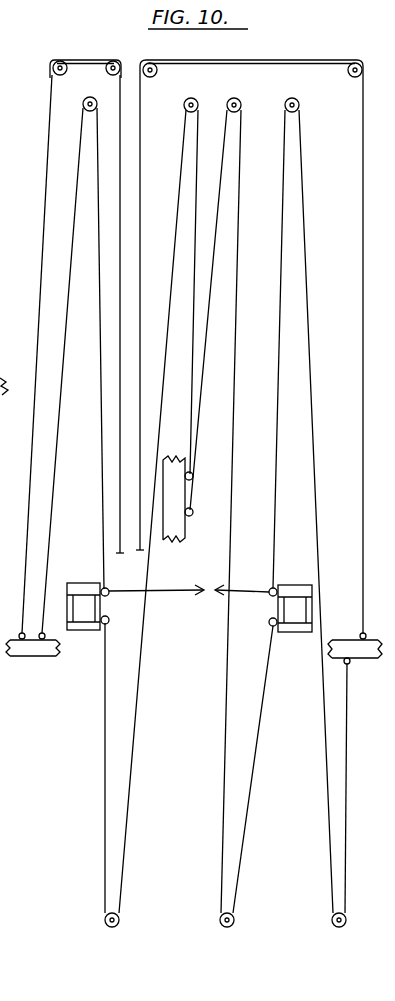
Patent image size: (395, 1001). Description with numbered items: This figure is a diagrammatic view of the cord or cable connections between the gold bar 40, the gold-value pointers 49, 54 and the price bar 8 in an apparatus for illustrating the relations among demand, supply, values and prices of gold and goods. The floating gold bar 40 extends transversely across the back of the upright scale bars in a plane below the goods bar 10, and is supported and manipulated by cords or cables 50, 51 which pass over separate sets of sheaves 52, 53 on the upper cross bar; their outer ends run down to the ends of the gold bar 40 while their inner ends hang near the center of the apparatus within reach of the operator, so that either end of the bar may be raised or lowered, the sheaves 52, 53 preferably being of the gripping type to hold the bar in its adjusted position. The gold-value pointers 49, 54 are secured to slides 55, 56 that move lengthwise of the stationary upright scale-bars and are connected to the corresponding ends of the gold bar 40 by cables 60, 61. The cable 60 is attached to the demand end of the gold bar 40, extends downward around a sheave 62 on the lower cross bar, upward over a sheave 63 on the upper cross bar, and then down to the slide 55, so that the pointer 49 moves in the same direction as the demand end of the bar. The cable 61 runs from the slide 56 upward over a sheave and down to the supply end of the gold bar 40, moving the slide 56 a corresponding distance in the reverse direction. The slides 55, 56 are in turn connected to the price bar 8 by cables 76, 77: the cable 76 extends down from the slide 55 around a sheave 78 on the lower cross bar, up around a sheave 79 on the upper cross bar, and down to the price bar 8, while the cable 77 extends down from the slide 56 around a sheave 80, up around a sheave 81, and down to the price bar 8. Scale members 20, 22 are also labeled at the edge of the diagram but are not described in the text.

The price bar 8 is at (172, 542).
The goods bar 10 is at (9, 401).
The scale member 20 is at (9, 196).
The scale member 22 is at (5, 47).
The gold bar 40 is at (32, 657).
The gold-value pointer 49 is at (258, 590).
The cord or cable 50 is at (141, 222).
The cord or cable 51 is at (49, 109).
The sheaves 52 is at (158, 71).
The sheaves 53 is at (110, 62).
The gold-value pointer 54 is at (124, 590).
The slide 55 is at (295, 634).
The slide 56 is at (85, 632).
The cord or cable 60 is at (317, 528).
The cord or cable 61 is at (103, 480).
The sheave 62 is at (338, 928).
The sheave 63 is at (90, 98).
The cord or cable 76 is at (223, 811).
The cord or cable 77 is at (128, 812).
The sheave 78 is at (227, 928).
The sheave 79 is at (239, 101).
The sheave 80 is at (112, 928).
The sheave 81 is at (196, 101).